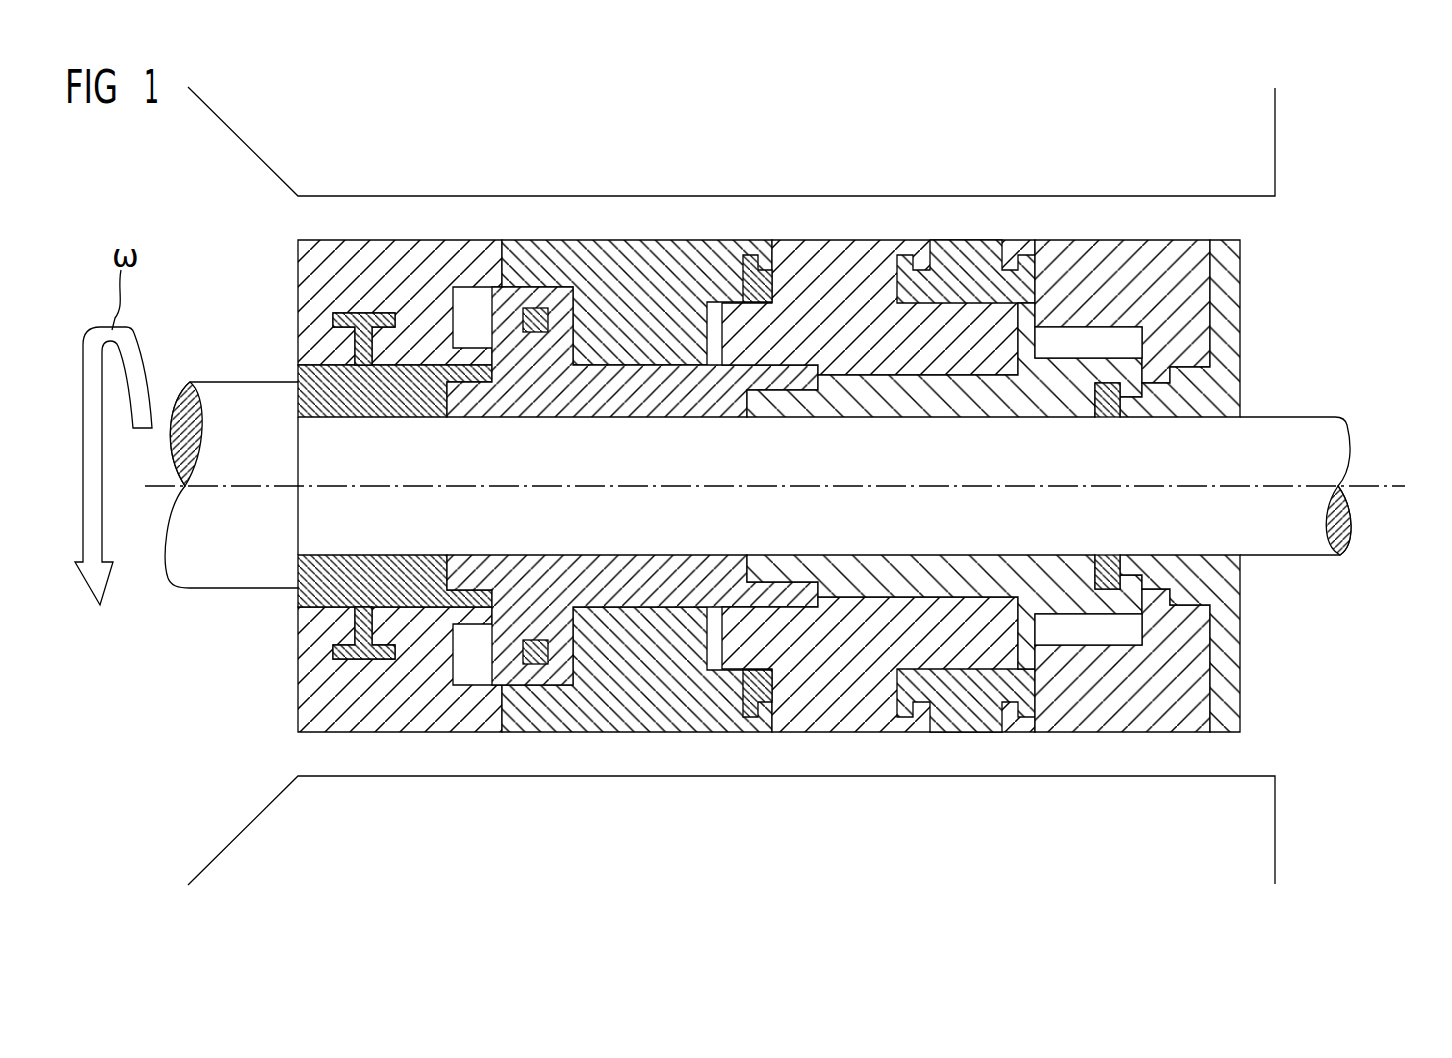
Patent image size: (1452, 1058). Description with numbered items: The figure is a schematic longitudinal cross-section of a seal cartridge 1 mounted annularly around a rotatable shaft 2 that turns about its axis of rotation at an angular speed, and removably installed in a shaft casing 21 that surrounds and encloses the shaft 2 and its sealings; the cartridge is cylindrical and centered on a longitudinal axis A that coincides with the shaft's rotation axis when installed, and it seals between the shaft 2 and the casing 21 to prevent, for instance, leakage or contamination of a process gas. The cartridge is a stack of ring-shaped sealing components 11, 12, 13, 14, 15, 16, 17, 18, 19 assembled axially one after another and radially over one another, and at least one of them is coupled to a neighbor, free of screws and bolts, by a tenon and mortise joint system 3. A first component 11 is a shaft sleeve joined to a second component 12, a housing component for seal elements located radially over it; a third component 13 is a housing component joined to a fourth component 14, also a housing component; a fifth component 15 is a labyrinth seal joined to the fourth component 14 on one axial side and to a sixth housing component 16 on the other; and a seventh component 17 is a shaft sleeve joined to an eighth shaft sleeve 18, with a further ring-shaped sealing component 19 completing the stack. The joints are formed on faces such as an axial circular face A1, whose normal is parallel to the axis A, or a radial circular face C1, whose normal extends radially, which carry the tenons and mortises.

The seal cartridge 1 is at (523, 176).
The rotatable shaft 2 is at (1284, 545).
The tenon and mortise joint system 3 is at (360, 656).
The first TMRS component 11 is at (386, 392).
The second TMRS component 12 is at (410, 262).
The third TMRS component 13 is at (612, 262).
The fourth TMRS component 14 is at (818, 262).
The fifth TMRS component 15 is at (958, 262).
The sixth TMRS component 16 is at (1103, 262).
The seventh TMRS component 17 is at (1036, 395).
The eighth TMRS component 18 is at (1185, 395).
The ring-shaped sealing component 19 is at (617, 395).
The shaft casing 21 is at (1190, 196).
The axial circular face A1 is at (763, 718).
The radial circular face C1 is at (326, 608).
The longitudinal axis A is at (1387, 484).